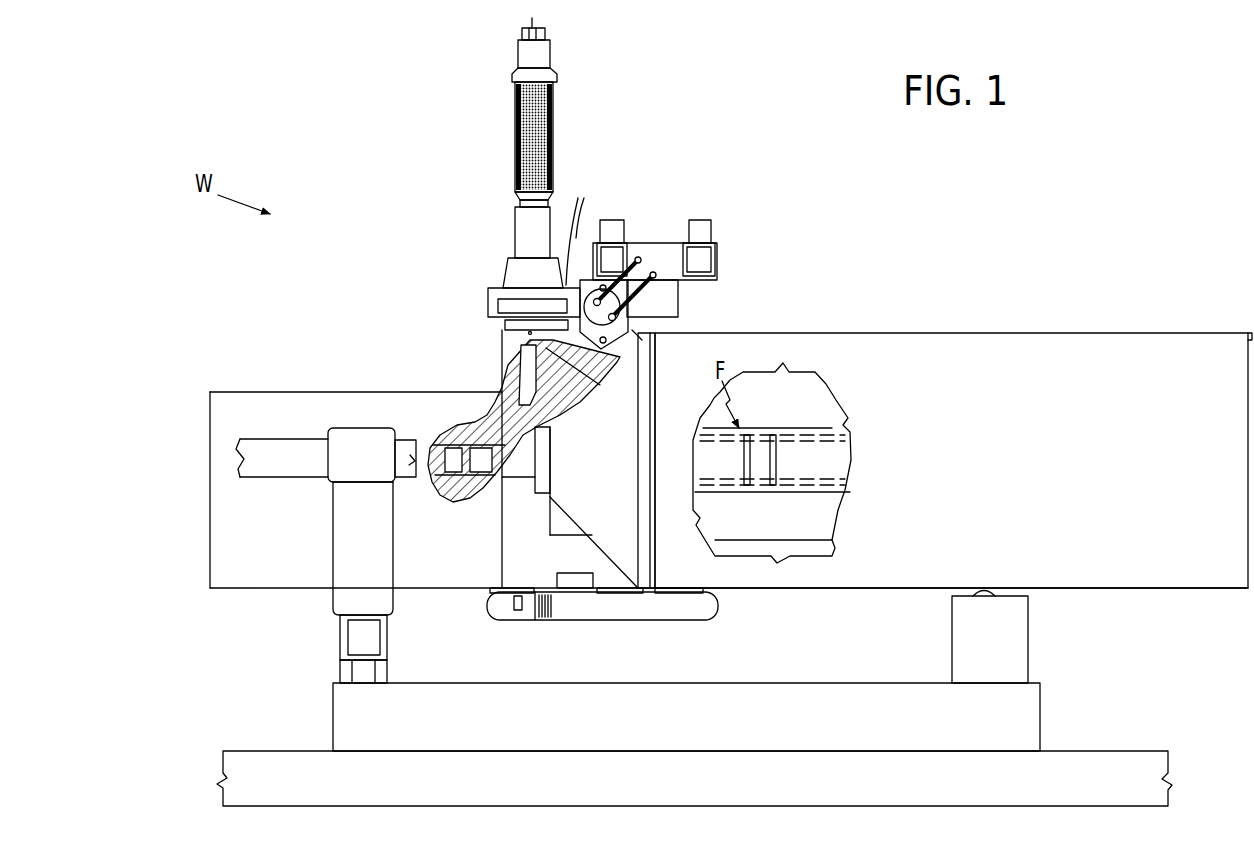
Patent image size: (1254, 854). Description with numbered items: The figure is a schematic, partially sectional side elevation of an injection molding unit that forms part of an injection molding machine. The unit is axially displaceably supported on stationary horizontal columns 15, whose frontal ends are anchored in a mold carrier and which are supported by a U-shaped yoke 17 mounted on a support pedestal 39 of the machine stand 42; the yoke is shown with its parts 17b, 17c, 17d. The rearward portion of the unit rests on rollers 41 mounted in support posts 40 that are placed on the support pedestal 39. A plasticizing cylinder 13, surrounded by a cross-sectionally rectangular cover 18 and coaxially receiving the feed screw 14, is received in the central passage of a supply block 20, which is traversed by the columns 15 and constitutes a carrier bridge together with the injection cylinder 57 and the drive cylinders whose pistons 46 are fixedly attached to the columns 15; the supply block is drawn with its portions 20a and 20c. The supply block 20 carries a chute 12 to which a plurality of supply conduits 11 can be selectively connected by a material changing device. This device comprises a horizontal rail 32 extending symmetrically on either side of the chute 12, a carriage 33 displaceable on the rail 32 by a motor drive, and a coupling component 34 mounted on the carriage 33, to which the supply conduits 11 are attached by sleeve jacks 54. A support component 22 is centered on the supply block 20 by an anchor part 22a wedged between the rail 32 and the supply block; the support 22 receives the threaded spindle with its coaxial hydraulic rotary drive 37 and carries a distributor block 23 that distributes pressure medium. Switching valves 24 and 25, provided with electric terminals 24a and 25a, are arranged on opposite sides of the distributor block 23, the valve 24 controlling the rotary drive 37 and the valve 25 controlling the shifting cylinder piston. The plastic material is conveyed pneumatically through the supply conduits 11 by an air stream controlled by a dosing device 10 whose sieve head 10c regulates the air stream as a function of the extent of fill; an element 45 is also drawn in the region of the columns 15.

The dosing device 10 is at (563, 128).
The sieve head 10c is at (520, 122).
The supply conduits 11 is at (546, 33).
The chute 12 is at (531, 367).
The plasticizing cylinder 13 is at (446, 498).
The feed screw 14 is at (416, 450).
The horizontal columns 15 is at (286, 465).
The U-shaped yoke 17 is at (327, 521).
The holder body 17b is at (366, 554).
The holder head 17c is at (372, 456).
The holder fastening nut 17d is at (366, 645).
The cover 18 is at (252, 389).
The supply block 20 is at (658, 414).
The fixture block 20a is at (527, 536).
The fixture wedge 20c is at (641, 500).
The support component 22 is at (669, 300).
The anchor part 22a is at (516, 325).
The distributor block 23 is at (690, 281).
The switching valve 24 is at (707, 262).
The electric terminal 24a is at (699, 230).
The switching valve 25 is at (613, 262).
The electric terminal 25a is at (612, 230).
The horizontal rail 32 is at (521, 305).
The carriage 33 is at (576, 228).
The coupling component 34 is at (531, 272).
The hydraulic rotary drive 37 is at (641, 341).
The support pedestal 39 is at (849, 721).
The support posts 40 is at (991, 638).
The rollers 41 is at (982, 593).
The machine stand 42 is at (1048, 779).
The shaft guide 45 is at (816, 433).
The pistons 46 is at (812, 489).
The sleeve jacks 54 is at (531, 227).
The injection cylinder 57 is at (791, 406).